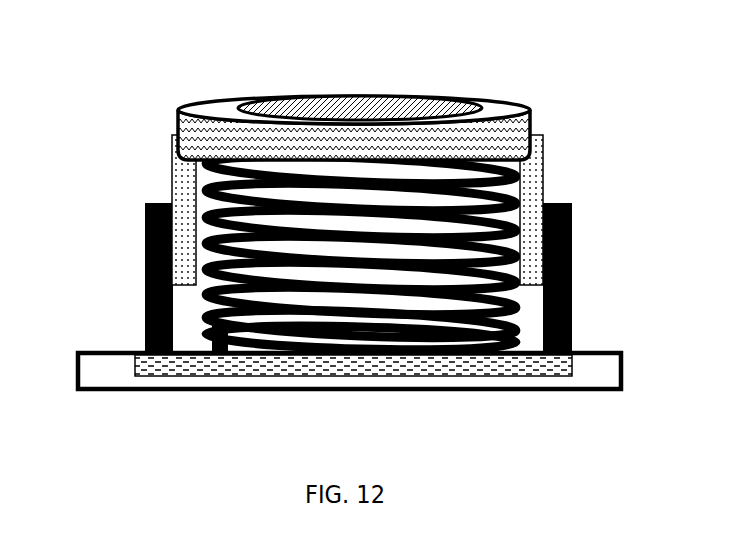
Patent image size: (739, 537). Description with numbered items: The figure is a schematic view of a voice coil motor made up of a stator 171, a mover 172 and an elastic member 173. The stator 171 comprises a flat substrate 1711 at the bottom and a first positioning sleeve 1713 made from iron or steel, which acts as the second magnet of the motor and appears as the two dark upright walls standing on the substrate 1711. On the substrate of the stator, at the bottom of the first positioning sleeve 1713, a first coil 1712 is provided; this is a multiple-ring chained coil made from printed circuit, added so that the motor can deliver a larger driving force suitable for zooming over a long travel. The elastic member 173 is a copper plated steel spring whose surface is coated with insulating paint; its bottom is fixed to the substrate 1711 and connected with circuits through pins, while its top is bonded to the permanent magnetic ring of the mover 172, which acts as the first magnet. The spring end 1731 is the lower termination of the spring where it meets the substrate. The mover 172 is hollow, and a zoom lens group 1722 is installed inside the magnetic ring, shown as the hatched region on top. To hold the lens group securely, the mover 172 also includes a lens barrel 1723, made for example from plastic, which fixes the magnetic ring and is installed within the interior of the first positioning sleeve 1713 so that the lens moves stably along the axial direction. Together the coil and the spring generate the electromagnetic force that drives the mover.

The stator 171 is at (339, 304).
The substrate 1711 is at (349, 394).
The first coil 1712 is at (353, 393).
The first positioning sleeve 1713 is at (317, 262).
The mover 172 is at (393, 155).
The zoom lens group 1722 is at (360, 73).
The lens barrel 1723 is at (393, 182).
The elastic member 173 is at (296, 262).
The spring end 1731 is at (290, 375).